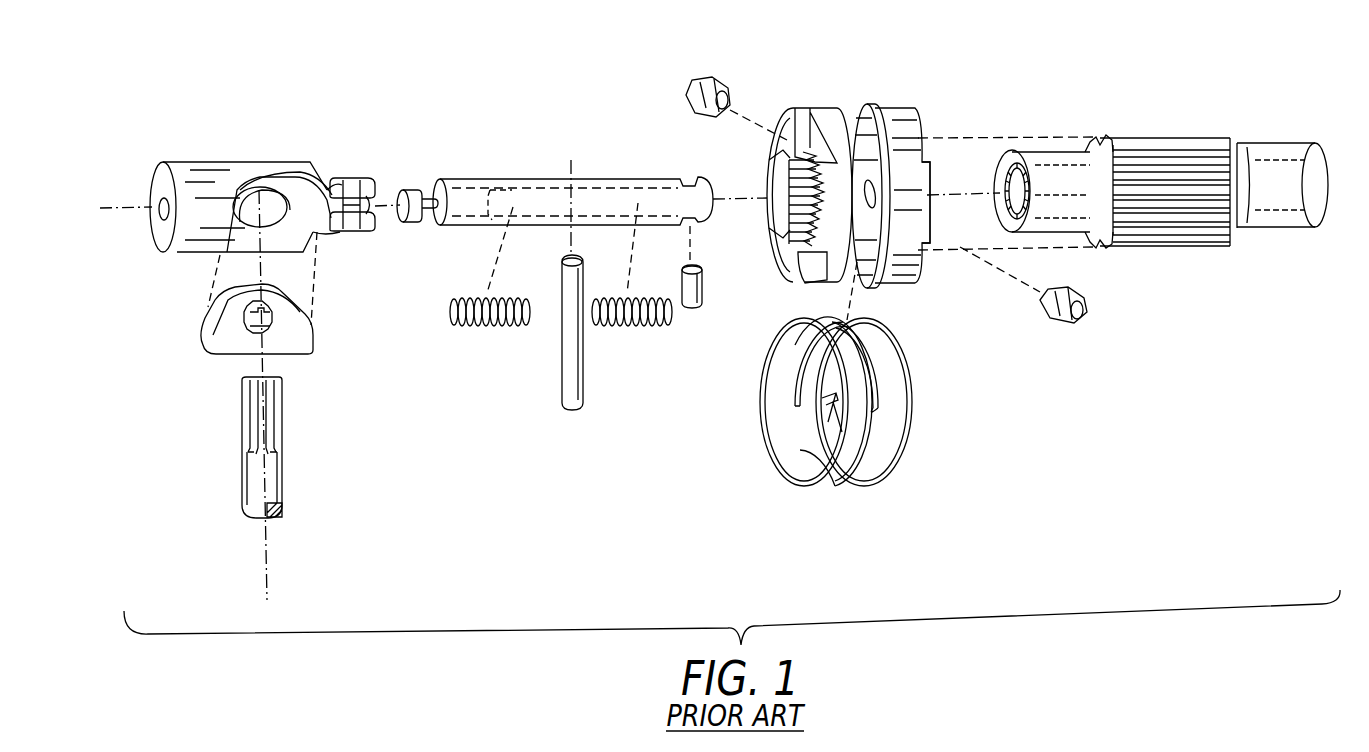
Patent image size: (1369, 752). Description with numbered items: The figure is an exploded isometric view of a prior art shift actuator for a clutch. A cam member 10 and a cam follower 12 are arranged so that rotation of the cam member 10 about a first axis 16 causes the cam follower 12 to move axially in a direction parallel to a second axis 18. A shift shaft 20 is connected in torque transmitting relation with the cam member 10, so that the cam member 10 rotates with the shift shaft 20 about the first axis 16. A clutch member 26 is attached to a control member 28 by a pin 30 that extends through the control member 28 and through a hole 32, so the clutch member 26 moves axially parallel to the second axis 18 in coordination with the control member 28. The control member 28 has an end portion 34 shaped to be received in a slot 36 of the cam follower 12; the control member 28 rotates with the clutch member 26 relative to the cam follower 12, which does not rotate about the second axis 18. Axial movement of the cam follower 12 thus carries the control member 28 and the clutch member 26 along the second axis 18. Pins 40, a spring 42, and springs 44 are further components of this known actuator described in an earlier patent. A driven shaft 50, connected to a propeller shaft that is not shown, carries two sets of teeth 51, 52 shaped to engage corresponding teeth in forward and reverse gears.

The cam member 10 is at (203, 313).
The cam follower 12 is at (162, 240).
The first axis 16 is at (267, 580).
The second axis 18 is at (110, 210).
The shift shaft 20 is at (250, 478).
The clutch member 26 is at (895, 284).
The control member 28 is at (465, 180).
The pin 30 is at (568, 387).
The hole 32 is at (878, 193).
The end portion 34 is at (413, 224).
The slot 36 is at (347, 197).
The pins 40 is at (695, 110).
The spring 42 is at (760, 433).
The springs 44 is at (485, 327).
The driven shaft 50 is at (1260, 157).
The set of teeth 51 is at (795, 273).
The set of teeth 52 is at (928, 253).